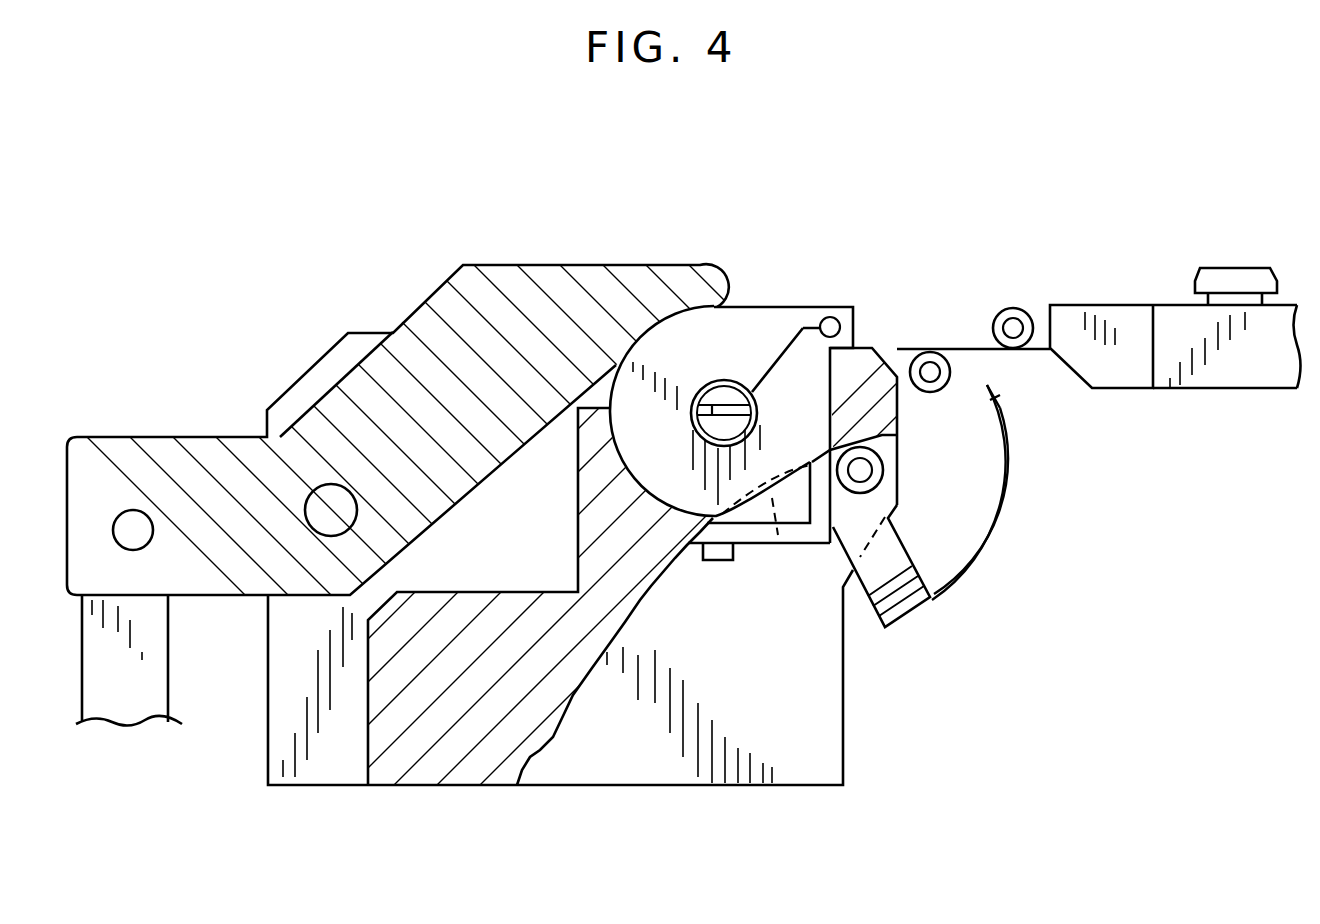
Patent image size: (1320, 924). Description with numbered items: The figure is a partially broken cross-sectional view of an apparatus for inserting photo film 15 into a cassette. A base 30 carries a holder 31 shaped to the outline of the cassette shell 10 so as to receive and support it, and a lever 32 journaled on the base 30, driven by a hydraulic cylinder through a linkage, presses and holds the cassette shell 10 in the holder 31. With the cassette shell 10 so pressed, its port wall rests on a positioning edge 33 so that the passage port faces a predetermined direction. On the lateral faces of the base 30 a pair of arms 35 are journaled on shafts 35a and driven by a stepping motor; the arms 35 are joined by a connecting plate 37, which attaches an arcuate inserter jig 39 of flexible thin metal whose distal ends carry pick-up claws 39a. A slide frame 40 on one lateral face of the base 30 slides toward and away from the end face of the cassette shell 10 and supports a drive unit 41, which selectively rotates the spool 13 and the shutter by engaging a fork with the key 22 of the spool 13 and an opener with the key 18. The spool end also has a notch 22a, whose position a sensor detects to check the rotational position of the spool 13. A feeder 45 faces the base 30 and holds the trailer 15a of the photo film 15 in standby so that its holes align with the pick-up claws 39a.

The cassette shell 10 is at (752, 307).
The spool 13 is at (668, 426).
The photo film 15 is at (973, 308).
The trailer 15a is at (927, 351).
The key 18 is at (830, 317).
The key 22 is at (753, 395).
The notch 22a is at (708, 382).
The base 30 is at (328, 780).
The holder 31 is at (778, 535).
The lever 32 is at (410, 312).
The positioning edge 33 is at (873, 348).
The arms 35 is at (908, 553).
The shaft 35a is at (872, 470).
The connecting plate 37 is at (883, 628).
The inserter jig 39 is at (957, 592).
The pick-up claws 39a is at (1000, 403).
The slide frame 40 is at (747, 540).
The drive unit 41 is at (812, 545).
The feeder 45 is at (1105, 315).